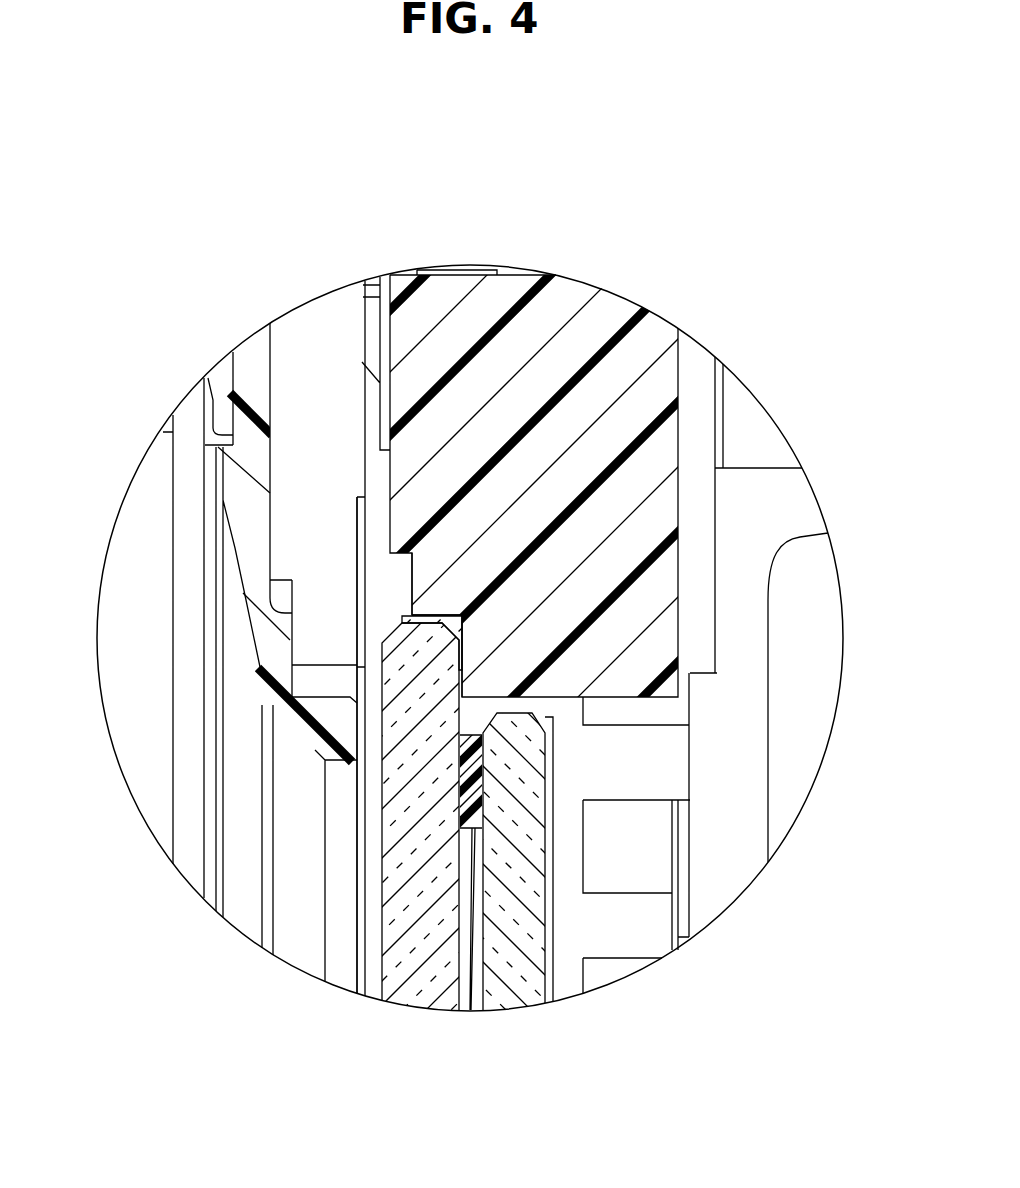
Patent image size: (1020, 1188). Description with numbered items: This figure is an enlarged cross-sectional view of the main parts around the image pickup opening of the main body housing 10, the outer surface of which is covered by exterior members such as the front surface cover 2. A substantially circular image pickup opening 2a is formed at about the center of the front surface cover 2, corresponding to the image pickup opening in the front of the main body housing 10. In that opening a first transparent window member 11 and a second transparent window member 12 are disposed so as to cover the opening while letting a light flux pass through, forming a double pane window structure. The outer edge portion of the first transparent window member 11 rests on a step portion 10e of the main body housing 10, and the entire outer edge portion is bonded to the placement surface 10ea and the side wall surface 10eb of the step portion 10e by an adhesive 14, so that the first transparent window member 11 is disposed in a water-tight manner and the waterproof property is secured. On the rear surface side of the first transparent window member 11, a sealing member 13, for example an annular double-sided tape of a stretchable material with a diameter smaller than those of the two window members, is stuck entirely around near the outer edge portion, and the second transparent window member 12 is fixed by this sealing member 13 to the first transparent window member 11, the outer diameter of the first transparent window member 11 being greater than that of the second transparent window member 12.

The front surface cover 2 is at (253, 373).
The image pickup opening 2a is at (341, 890).
The main body housing 10 is at (432, 297).
The step portion 10e is at (621, 217).
The placement surface 10ea is at (463, 640).
The side wall surface 10eb is at (440, 615).
The first transparent window member 11 is at (412, 977).
The second transparent window member 12 is at (527, 977).
The sealing member 13 is at (470, 983).
The adhesive 14 is at (405, 621).